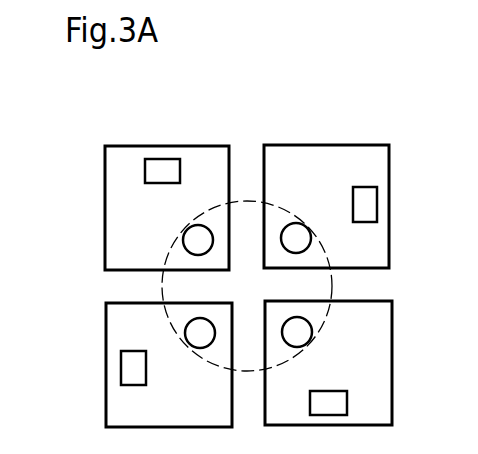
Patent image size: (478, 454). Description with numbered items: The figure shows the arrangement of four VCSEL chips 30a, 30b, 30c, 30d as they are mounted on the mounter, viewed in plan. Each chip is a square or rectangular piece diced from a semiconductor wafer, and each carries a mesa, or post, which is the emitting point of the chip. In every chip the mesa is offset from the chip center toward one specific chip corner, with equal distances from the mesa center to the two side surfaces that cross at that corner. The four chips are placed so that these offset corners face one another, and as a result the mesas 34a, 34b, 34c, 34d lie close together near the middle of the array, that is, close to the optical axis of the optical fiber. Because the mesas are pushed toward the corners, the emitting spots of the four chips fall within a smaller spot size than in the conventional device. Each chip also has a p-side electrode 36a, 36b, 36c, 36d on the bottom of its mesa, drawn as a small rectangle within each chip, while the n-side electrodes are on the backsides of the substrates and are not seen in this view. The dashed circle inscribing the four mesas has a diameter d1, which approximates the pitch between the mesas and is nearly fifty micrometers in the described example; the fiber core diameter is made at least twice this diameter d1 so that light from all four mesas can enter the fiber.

The diameter of inscribing circle for the mesas d1 is at (247, 200).
The VCSEL chip 30a is at (389, 148).
The VCSEL chip 30b is at (392, 303).
The VCSEL chip 30c is at (106, 313).
The VCSEL chip 30d is at (105, 165).
The mesa 34a is at (296, 238).
The mesa 34b is at (297, 332).
The mesa 34c is at (200, 333).
The mesa 34d is at (198, 240).
The p-side electrode 36a is at (368, 202).
The p-side electrode 36b is at (336, 404).
The p-side electrode 36c is at (132, 370).
The p-side electrode 36d is at (158, 173).